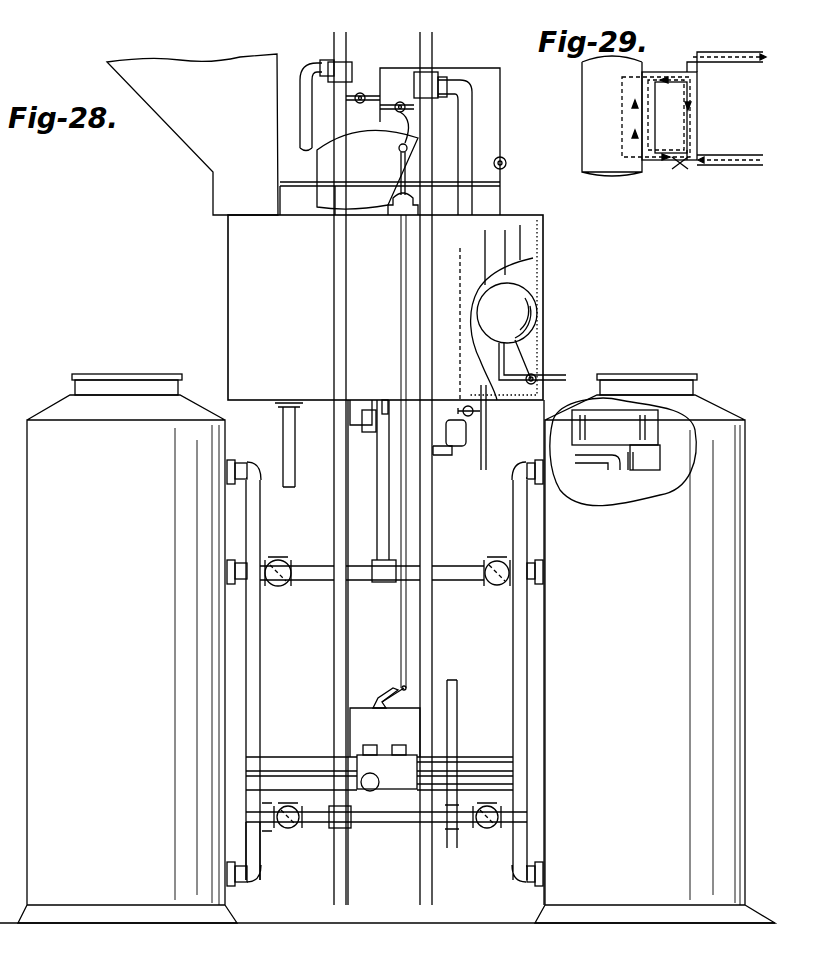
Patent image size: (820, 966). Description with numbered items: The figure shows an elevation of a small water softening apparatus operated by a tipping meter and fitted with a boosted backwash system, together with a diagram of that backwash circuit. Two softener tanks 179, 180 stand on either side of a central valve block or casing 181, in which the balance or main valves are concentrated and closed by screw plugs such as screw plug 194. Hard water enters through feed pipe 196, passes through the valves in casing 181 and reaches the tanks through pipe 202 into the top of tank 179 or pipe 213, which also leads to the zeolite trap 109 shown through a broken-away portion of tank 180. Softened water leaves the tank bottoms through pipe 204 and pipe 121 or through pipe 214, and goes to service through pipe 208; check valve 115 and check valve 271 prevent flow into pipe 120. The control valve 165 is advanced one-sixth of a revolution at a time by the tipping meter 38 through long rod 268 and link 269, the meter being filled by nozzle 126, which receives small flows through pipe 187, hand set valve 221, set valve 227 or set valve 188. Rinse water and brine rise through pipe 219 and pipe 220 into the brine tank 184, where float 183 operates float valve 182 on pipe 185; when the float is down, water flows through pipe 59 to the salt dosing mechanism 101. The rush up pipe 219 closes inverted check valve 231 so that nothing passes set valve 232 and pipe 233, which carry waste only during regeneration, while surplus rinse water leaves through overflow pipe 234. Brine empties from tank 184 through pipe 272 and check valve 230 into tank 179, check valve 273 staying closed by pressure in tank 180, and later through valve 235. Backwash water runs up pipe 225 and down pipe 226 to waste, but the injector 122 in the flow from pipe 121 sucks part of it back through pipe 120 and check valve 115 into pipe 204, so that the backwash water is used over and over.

In FIG. 28, the tipping meter 38 is at (326, 176).
In FIG. 28, the pipe 59 is at (282, 176).
In FIG. 28, the salt dosing mechanism 101 is at (190, 140).
In FIG. 28, the zeolite trap 109 is at (620, 410).
In FIG. 29, the zeolite trap 109 is at (697, 80).
In FIG. 28, the check valve 115 is at (312, 840).
In FIG. 28, the pipe 120 is at (318, 826).
In FIG. 29, the pipe 120 is at (697, 112).
In FIG. 28, the pipe 121 is at (318, 790).
In FIG. 29, the pipe 121 is at (752, 168).
In FIG. 28, the injector 122 is at (255, 814).
In FIG. 29, the injector 122 is at (700, 158).
In FIG. 28, the nozzle 126 is at (392, 128).
In FIG. 28, the control valve 165 is at (380, 695).
In FIG. 28, the softener tank 179 is at (72, 400).
In FIG. 29, the softener tank 179 is at (605, 168).
In FIG. 28, the softener tank 180 is at (703, 404).
In FIG. 28, the casing 181 is at (388, 755).
In FIG. 28, the float valve 182 is at (540, 362).
In FIG. 28, the float 183 is at (535, 305).
In FIG. 28, the brine tank 184 is at (540, 250).
In FIG. 28, the pipe 185 is at (500, 188).
In FIG. 28, the pipe 187 is at (500, 97).
In FIG. 28, the set valve 188 is at (509, 159).
In FIG. 28, the screw plug 194 is at (350, 718).
In FIG. 28, the feed pipe 196 is at (458, 680).
In FIG. 28, the pipe 202 is at (262, 640).
In FIG. 29, the pipe 202 is at (655, 72).
In FIG. 28, the pipe 204 is at (258, 840).
In FIG. 29, the pipe 204 is at (676, 170).
In FIG. 28, the pipe 208 is at (458, 848).
In FIG. 28, the pipe 213 is at (590, 468).
In FIG. 28, the pipe 214 is at (440, 786).
In FIG. 28, the pipe 219 is at (432, 243).
In FIG. 28, the pipe 220 is at (470, 135).
In FIG. 28, the hand set valve 221 is at (401, 152).
In FIG. 28, the pipe 225 is at (334, 305).
In FIG. 29, the pipe 225 is at (720, 58).
In FIG. 28, the pipe 226 is at (300, 103).
In FIG. 28, the set valve 227 is at (364, 88).
In FIG. 28, the check valve 230 is at (274, 560).
In FIG. 28, the inverted check valve 231 is at (470, 432).
In FIG. 28, the set valve 232 is at (480, 412).
In FIG. 28, the pipe 233 is at (478, 460).
In FIG. 28, the overflow pipe 234 is at (297, 482).
In FIG. 28, the valve 235 is at (378, 408).
In FIG. 28, the long rod 268 is at (402, 612).
In FIG. 28, the link 269 is at (398, 682).
In FIG. 28, the check valve 271 is at (520, 840).
In FIG. 28, the pipe 272 is at (380, 512).
In FIG. 28, the check valve 273 is at (355, 420).